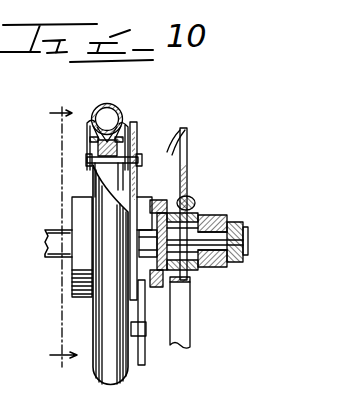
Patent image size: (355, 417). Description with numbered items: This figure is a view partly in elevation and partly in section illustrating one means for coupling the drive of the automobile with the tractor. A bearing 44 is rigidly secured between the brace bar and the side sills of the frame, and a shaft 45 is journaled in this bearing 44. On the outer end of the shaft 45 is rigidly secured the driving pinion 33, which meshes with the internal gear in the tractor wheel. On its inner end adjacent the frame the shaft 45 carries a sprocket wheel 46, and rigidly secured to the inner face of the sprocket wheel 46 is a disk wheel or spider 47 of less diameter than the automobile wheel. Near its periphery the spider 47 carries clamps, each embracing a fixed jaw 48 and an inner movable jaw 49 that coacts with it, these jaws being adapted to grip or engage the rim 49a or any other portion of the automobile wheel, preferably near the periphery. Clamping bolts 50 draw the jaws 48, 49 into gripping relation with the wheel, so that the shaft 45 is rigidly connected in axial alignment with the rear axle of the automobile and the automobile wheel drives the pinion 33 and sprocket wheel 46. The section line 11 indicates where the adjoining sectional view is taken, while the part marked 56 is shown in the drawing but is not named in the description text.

The section line 11 is at (63, 243).
The driving pinion 33 is at (220, 267).
The bearing 44 is at (190, 213).
The shaft 45 is at (233, 225).
The sprocket wheel 46 is at (162, 165).
The disk wheel or spider 47 is at (148, 197).
The fixed jaw 48 is at (128, 135).
The inner movable jaw 49 is at (84, 140).
The rim 49a is at (94, 143).
The clamping bolts 50 is at (107, 173).
The clamp bolt 56 is at (112, 170).